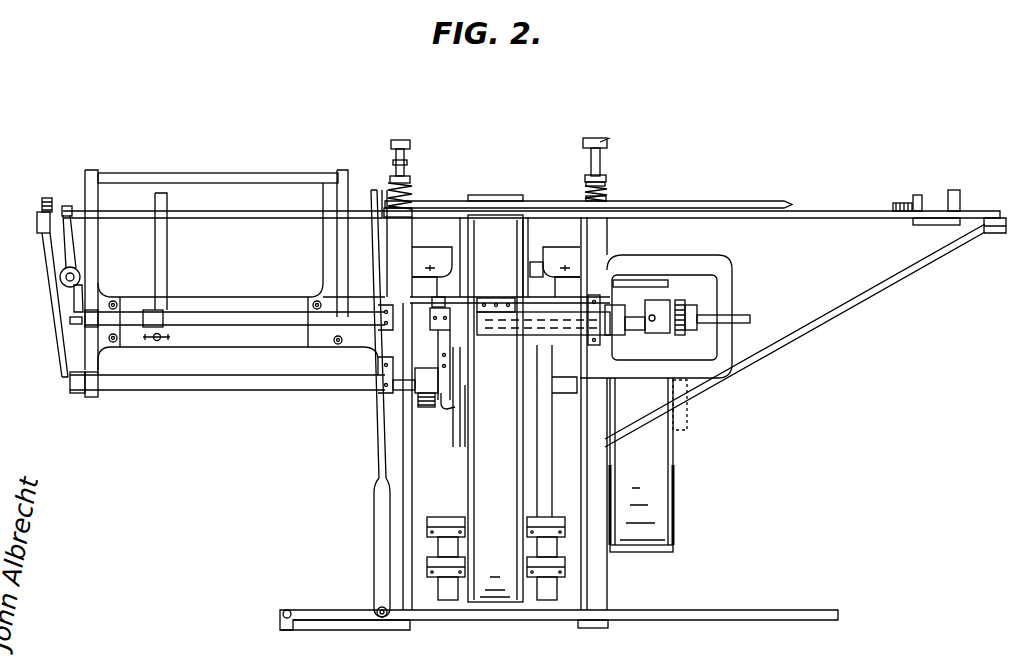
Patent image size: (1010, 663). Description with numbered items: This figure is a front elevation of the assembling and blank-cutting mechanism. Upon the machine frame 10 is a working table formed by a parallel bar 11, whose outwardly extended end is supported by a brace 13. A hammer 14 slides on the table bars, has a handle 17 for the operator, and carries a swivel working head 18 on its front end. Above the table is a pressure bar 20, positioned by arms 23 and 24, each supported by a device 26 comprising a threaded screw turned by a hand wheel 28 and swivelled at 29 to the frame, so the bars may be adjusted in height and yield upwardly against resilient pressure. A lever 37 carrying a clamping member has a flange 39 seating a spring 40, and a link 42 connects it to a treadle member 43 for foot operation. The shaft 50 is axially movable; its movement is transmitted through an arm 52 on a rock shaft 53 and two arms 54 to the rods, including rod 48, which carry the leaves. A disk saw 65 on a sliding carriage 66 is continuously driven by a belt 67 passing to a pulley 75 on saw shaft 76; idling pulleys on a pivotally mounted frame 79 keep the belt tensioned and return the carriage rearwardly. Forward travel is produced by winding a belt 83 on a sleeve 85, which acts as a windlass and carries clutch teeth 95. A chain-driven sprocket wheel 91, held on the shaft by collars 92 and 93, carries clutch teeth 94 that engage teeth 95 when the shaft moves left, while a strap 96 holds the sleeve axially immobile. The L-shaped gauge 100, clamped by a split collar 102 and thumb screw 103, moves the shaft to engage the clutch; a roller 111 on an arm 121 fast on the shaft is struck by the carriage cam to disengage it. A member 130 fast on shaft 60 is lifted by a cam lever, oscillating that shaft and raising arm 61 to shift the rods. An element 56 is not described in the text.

The machine frame 10 is at (601, 267).
The bar 11 is at (846, 213).
The brace 13 is at (823, 315).
The hammer 14 is at (917, 197).
The handle 17 is at (957, 195).
The swivel working head 18 is at (894, 204).
The pressure bar 20 is at (724, 207).
The arm 23 is at (607, 199).
The arm 24 is at (531, 557).
The device 26 is at (405, 166).
The hand wheel 28 is at (603, 141).
The swivel 29 is at (592, 184).
The lever 37 is at (387, 190).
The flange 39 is at (409, 191).
The spring 40 is at (411, 201).
The link 42 is at (379, 428).
The treadle member 43 is at (477, 610).
The rod 48 is at (273, 213).
The shaft 50 is at (238, 326).
The arm 52 is at (73, 294).
The rock shaft 53 is at (79, 272).
The arm 54 is at (69, 244).
The lever end 56 is at (72, 207).
The shaft 60 is at (213, 378).
The arm 61 is at (73, 322).
The disk saw 65 is at (372, 236).
The sliding carriage 66 is at (423, 256).
The belt 67 is at (486, 470).
The pulley 75 is at (532, 251).
The shaft 76 is at (539, 279).
The pivotally mounted frame 79 is at (546, 451).
The belt 83 is at (503, 288).
The sleeve 85 is at (512, 336).
The sprocket wheel 91 is at (680, 307).
The collar 92 is at (691, 317).
The collar 93 is at (653, 316).
The clutch teeth 94 is at (642, 331).
The clutch teeth 95 is at (630, 335).
The strap 96 is at (596, 300).
The gauge 100 is at (158, 265).
The split collar 102 is at (154, 316).
The thumb screw 103 is at (167, 335).
The roller 111 is at (446, 305).
The arm 121 is at (455, 407).
The member 130 is at (426, 400).